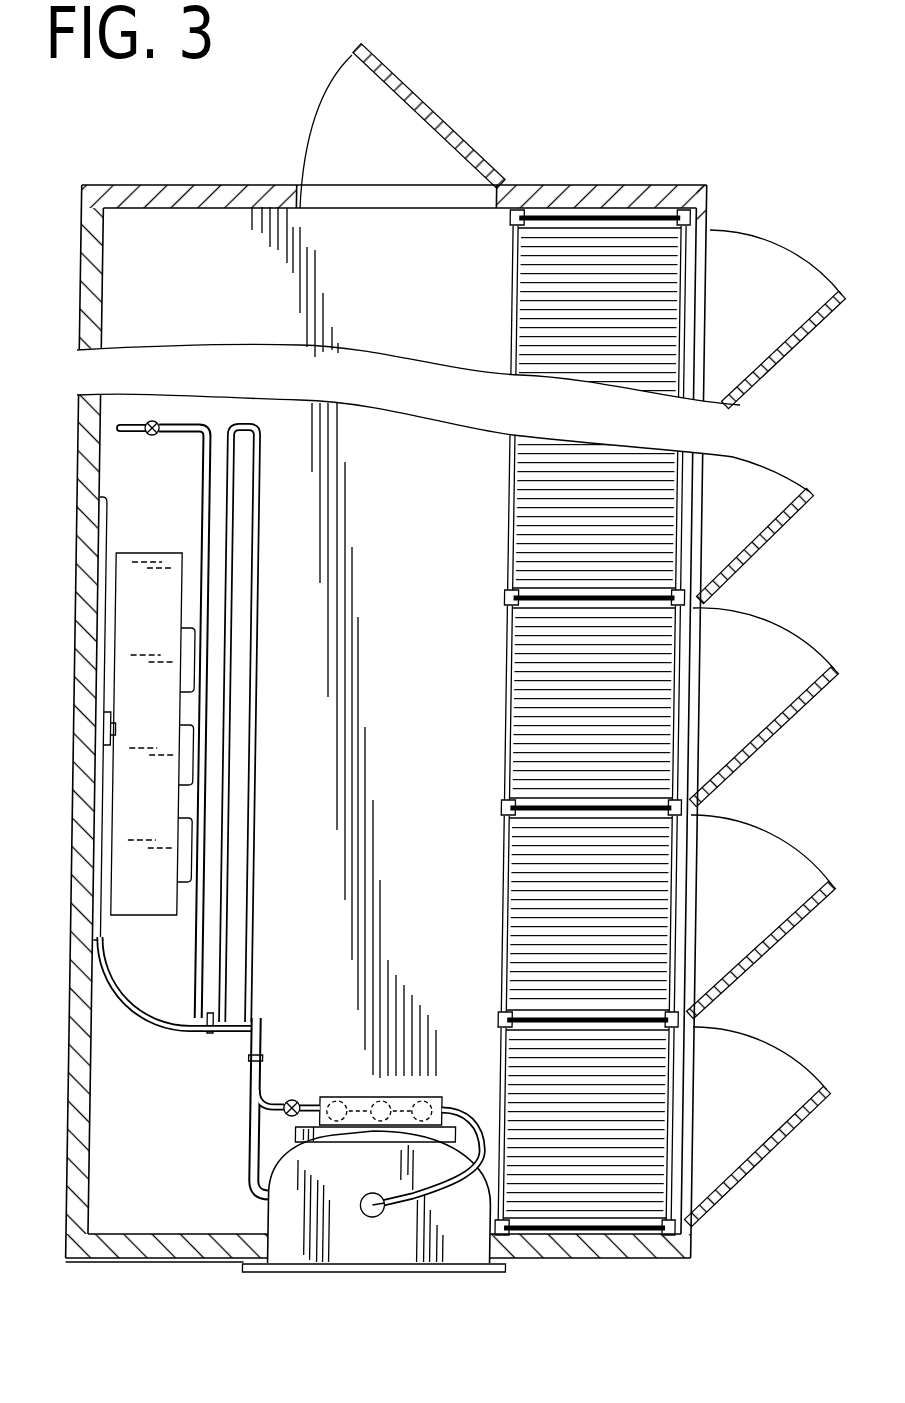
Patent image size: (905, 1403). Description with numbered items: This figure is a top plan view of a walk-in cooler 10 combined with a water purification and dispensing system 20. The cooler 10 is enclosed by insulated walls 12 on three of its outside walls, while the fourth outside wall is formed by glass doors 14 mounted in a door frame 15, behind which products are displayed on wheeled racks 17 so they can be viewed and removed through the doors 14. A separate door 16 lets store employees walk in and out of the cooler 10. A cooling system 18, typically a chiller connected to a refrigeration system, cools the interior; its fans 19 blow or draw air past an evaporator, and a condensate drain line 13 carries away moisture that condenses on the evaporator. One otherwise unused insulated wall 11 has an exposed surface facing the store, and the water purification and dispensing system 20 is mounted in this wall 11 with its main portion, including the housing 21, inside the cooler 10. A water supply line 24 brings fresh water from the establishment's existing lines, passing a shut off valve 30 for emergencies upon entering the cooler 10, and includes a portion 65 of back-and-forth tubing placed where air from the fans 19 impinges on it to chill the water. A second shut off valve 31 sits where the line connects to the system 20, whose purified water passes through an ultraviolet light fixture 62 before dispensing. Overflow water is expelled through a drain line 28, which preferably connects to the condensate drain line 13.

The walk-in cooler 10 is at (158, 176).
The insulated wall 11 is at (158, 1247).
The insulated walls 12 is at (80, 268).
The condensate drain line 13 is at (103, 512).
The doors 14 is at (782, 360).
The door frame 15 is at (712, 213).
The door 16 is at (397, 90).
The wheeled racks 17 is at (668, 285).
The cooling system 18 is at (130, 572).
The fans 19 is at (185, 648).
The water purification and dispensing system 20 is at (459, 1292).
The housing 21 is at (298, 1237).
The water supply line 24 is at (267, 1032).
The drain line 28 is at (150, 1005).
The shut off valve 30 is at (152, 420).
The shut off valve 31 is at (293, 1098).
The ultraviolet light fixture 62 is at (370, 1215).
The portion 65 is at (258, 668).